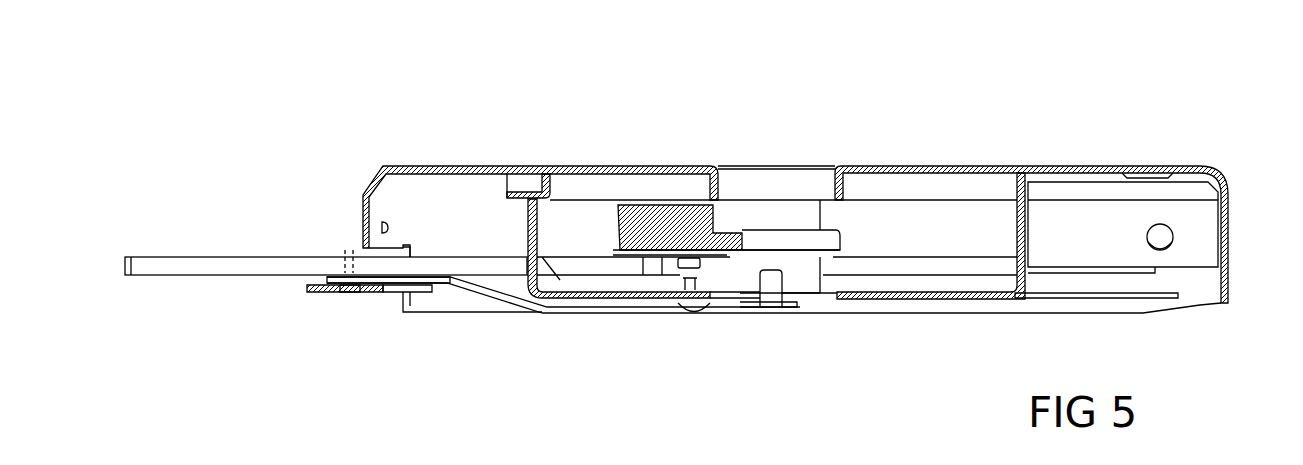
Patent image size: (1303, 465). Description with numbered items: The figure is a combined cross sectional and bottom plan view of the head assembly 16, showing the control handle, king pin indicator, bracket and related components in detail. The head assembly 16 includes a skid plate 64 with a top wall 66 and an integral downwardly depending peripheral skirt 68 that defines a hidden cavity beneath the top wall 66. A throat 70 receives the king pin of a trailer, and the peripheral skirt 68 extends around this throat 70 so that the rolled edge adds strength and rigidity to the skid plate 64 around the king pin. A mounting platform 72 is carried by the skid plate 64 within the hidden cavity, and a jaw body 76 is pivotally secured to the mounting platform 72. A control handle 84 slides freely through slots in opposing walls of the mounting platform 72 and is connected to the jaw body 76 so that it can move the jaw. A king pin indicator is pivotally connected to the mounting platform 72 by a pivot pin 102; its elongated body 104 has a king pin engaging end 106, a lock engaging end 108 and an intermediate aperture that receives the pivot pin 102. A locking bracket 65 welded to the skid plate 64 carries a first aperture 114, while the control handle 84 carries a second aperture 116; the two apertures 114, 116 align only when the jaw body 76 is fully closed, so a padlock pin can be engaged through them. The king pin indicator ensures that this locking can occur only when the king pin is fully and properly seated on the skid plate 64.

The head assembly 16 is at (1090, 127).
The skid plate 64 is at (1208, 165).
The locking bracket 65 is at (322, 290).
The top wall 66 is at (473, 167).
The peripheral skirt 68 is at (1213, 288).
The throat 70 is at (772, 182).
The mounting platform 72 is at (920, 298).
The jaw body 76 is at (663, 215).
The control handle 84 is at (201, 263).
The pivot pin 102 is at (690, 315).
The elongated body 104 is at (495, 298).
The king pin engaging end 106 is at (773, 290).
The lock engaging end 108 is at (363, 280).
The first aperture 114 is at (348, 293).
The second aperture 116 is at (347, 253).